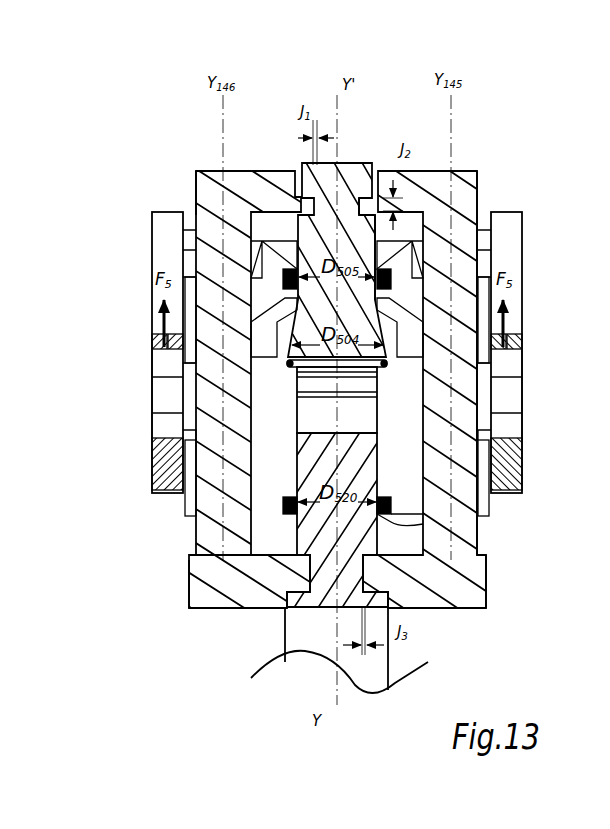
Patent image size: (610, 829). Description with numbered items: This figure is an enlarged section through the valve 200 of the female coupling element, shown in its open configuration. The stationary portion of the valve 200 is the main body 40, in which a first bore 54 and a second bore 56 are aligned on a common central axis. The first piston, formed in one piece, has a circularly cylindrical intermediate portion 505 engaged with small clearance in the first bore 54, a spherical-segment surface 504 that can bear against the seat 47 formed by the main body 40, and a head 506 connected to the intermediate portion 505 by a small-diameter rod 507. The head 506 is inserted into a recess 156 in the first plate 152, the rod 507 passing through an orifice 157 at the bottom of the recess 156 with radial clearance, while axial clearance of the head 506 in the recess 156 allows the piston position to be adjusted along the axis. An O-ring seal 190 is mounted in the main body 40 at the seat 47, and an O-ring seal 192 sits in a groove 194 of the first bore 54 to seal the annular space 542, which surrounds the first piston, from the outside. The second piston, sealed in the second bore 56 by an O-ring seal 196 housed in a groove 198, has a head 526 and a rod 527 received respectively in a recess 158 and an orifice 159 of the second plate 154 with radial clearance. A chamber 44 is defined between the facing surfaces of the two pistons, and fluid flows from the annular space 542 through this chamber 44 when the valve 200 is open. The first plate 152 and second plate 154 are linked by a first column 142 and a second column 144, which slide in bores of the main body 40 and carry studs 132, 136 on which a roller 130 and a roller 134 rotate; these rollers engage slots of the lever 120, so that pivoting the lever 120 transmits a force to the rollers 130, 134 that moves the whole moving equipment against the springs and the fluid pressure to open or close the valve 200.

The valve 200 is at (275, 145).
The head 506 is at (353, 170).
The rod 507 is at (370, 200).
The orifice 157 is at (430, 168).
The first plate 152 is at (460, 186).
The intermediate portion 505 is at (400, 240).
The lever 120 is at (507, 232).
The annular space 542 is at (420, 262).
The seat 47 is at (490, 316).
The second bore 56 is at (390, 363).
The stud 132 is at (522, 400).
The roller 130 is at (500, 405).
The O-ring seal 196 is at (395, 510).
The first column 142 is at (480, 540).
The groove 198 is at (430, 560).
The second plate 154 is at (450, 600).
The head 526 is at (350, 600).
The recess 158 is at (300, 608).
The orifice 159 is at (187, 597).
The rod 527 is at (218, 568).
The second column 144 is at (200, 523).
The O-ring seal 190 is at (170, 470).
The roller 134 is at (165, 420).
The stud 136 is at (172, 380).
The surface 504 is at (272, 330).
The groove 194 is at (270, 272).
The O-ring seal 192 is at (280, 252).
The main body 40 is at (193, 217).
The first bore 54 is at (282, 245).
The recess 156 is at (240, 176).
The chamber 44 is at (337, 400).